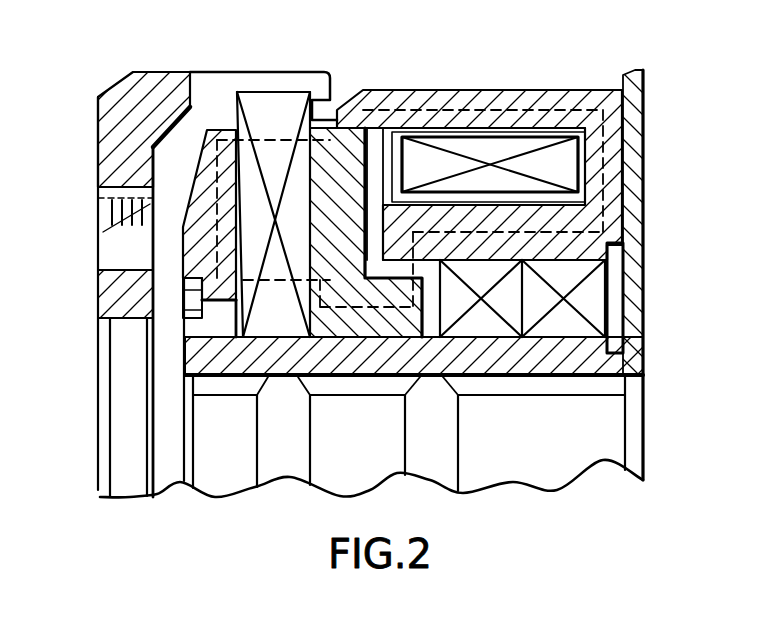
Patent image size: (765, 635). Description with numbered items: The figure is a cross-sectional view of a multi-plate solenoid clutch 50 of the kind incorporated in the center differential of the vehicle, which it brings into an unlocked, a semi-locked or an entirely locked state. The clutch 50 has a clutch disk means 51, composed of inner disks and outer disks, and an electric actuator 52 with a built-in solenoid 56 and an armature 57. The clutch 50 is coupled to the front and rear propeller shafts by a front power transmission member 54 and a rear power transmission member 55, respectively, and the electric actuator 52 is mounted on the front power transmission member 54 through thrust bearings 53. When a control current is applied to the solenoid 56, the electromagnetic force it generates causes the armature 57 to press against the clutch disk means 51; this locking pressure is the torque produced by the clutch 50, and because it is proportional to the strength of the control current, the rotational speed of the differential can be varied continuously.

The multi-plate solenoid clutch 50 is at (263, 86).
The clutch disk means 51 is at (253, 186).
The electric actuator 52 is at (524, 92).
The thrust bearings 53 is at (577, 305).
The front power transmission member 54 is at (352, 365).
The rear power transmission member 55 is at (132, 82).
The solenoid 56 is at (563, 163).
The armature 57 is at (190, 249).